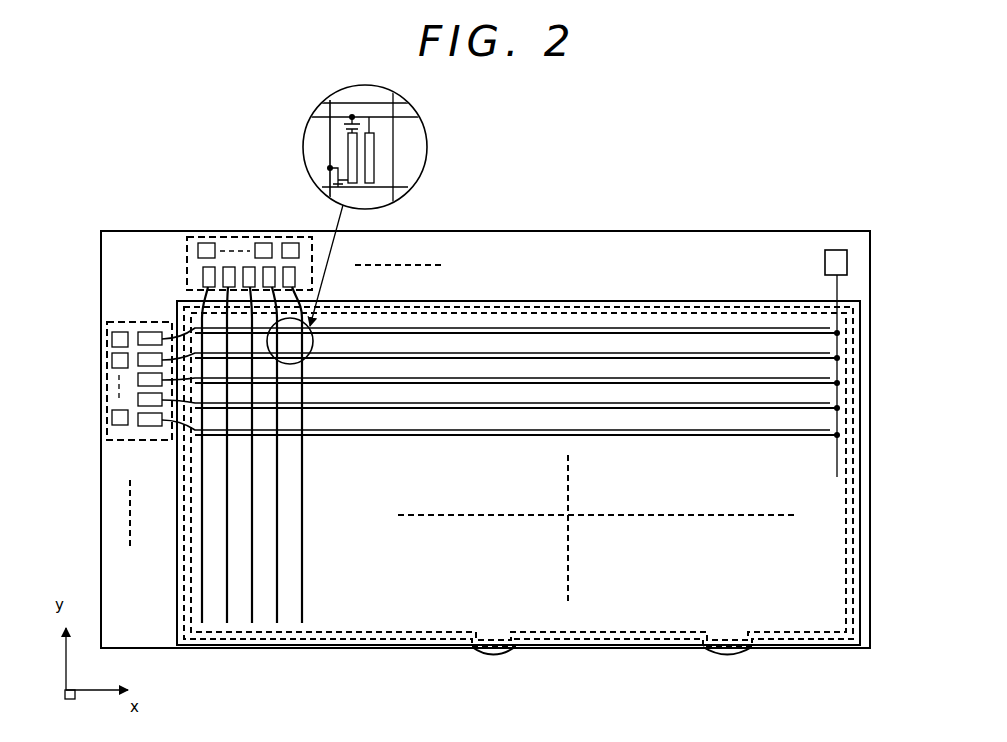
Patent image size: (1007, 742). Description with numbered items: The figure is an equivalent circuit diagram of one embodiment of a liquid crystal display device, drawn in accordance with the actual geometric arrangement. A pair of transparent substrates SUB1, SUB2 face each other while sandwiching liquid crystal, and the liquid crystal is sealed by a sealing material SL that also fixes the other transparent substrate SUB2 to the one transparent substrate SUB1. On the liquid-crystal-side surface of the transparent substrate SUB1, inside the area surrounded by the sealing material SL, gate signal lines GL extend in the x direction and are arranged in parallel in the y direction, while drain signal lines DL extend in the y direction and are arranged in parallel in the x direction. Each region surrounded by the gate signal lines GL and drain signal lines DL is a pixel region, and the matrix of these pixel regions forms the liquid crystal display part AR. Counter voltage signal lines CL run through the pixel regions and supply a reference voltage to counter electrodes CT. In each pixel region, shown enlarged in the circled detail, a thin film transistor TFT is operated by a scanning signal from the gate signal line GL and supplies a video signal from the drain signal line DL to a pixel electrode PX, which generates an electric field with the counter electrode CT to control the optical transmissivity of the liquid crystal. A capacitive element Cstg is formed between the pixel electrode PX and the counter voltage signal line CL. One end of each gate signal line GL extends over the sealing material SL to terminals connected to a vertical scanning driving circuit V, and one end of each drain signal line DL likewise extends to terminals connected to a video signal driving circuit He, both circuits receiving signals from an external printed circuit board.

The drain signal line DL is at (318, 112).
The capacitive element Cstg is at (342, 125).
The pixel electrode PX is at (349, 147).
The thin film transistor TFT is at (330, 168).
The counter voltage signal line CL is at (403, 120).
The counter electrode CT is at (374, 152).
The gate signal line GL is at (377, 192).
The video signal driving circuit He is at (187, 262).
The transparent substrate SUB1 is at (525, 232).
The transparent substrate SUB2 is at (622, 300).
The vertical scanning driving circuit V is at (124, 438).
The liquid crystal display part AR is at (596, 530).
The sealing material SL is at (403, 634).